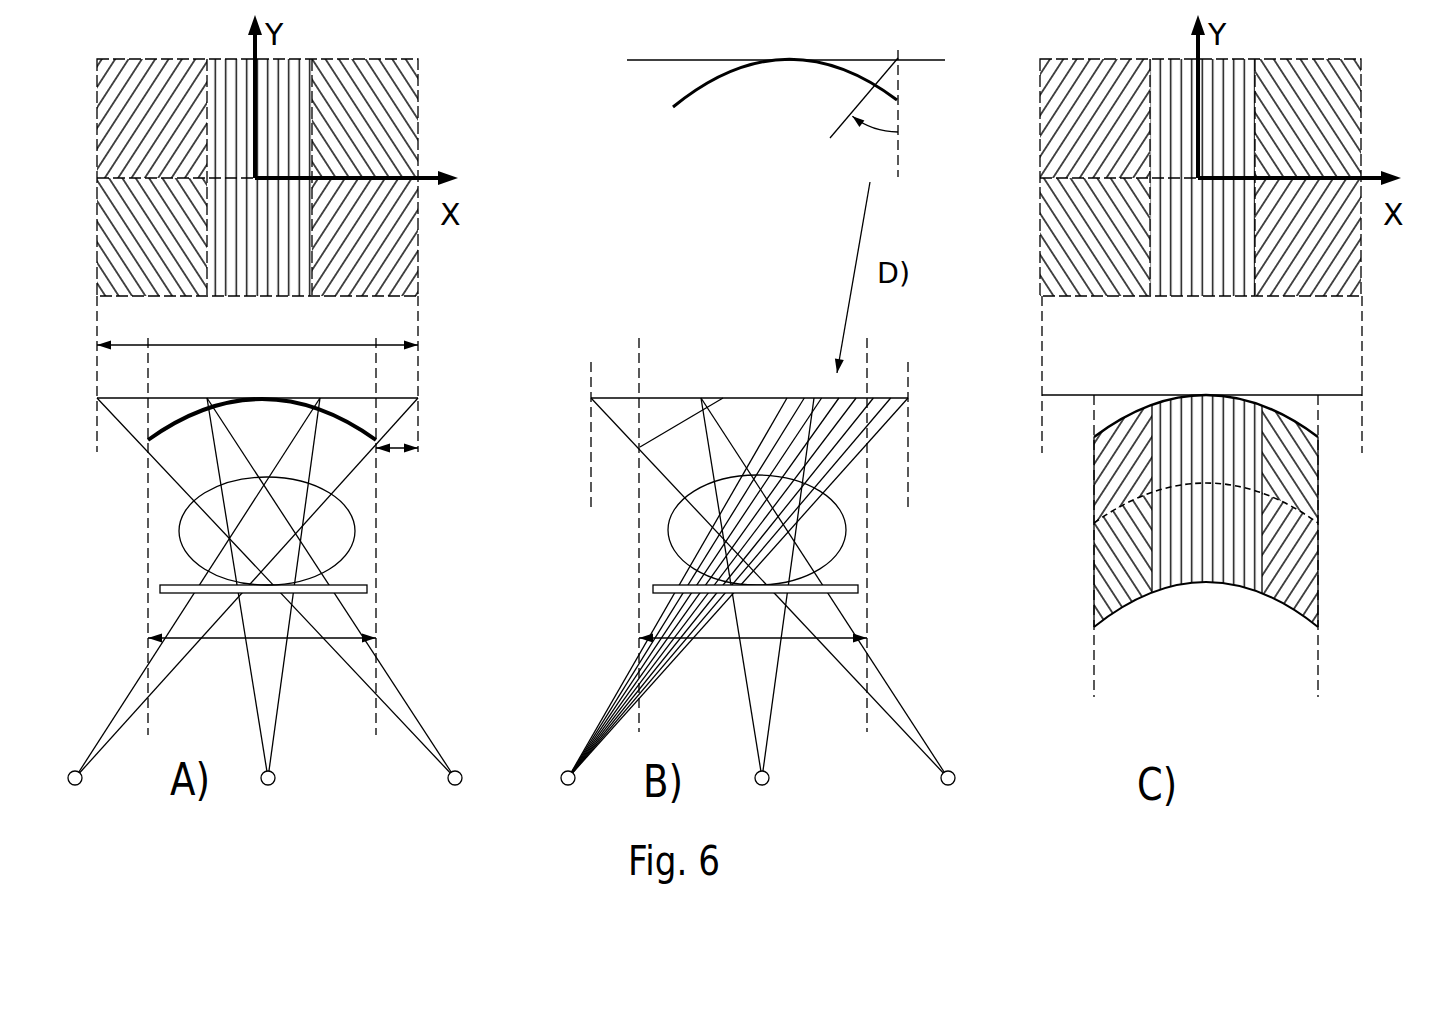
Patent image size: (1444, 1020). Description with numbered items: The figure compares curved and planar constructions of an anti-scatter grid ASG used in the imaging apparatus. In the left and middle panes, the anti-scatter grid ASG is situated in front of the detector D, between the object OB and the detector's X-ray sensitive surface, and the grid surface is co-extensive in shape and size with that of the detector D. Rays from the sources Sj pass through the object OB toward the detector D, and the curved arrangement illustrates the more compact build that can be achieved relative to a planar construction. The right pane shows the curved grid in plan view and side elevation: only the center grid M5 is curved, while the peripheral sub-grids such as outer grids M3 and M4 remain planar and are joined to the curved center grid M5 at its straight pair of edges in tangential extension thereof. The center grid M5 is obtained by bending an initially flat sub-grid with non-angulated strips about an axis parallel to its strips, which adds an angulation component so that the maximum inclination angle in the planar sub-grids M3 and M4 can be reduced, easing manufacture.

The anti-scatter grid ASG is at (358, 418).
The detector D is at (143, 397).
The object OB is at (178, 548).
The X-ray sources Sj is at (448, 768).
The outer grid M3 is at (1290, 573).
The outer grid M4 is at (1140, 530).
The center grid M5 is at (1207, 590).